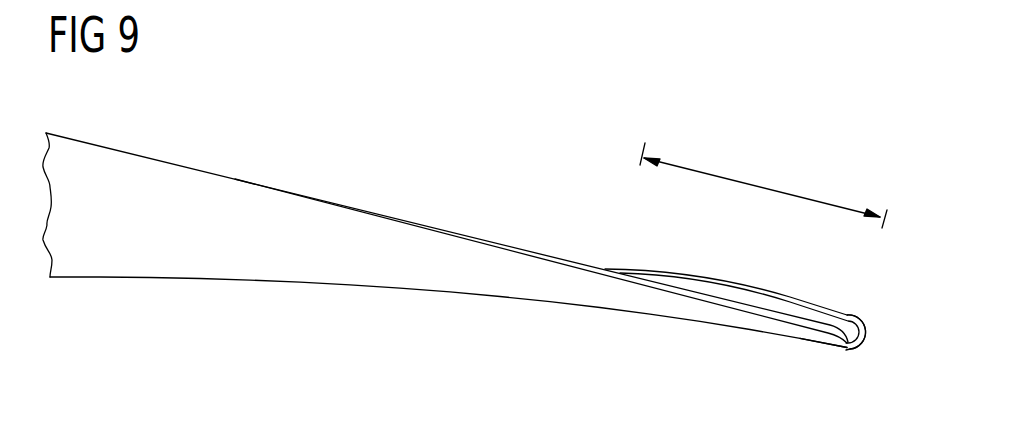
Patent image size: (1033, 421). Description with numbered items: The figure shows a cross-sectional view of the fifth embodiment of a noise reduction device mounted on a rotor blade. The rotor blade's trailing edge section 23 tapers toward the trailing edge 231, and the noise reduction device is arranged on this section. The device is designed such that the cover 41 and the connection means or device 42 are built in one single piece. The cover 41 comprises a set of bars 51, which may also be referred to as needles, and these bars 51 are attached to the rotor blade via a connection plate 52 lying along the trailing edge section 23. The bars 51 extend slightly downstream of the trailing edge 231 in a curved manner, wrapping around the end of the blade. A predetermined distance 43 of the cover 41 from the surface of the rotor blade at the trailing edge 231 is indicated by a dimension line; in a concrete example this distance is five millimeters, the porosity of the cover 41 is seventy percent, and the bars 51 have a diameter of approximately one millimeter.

The trailing edge section 23 is at (420, 284).
The trailing edge 231 is at (842, 350).
The cover 41 is at (795, 298).
The connection means or device 42 is at (866, 333).
The predetermined distance 43 is at (755, 182).
The bars 51 is at (740, 290).
The connection plate 52 is at (577, 263).